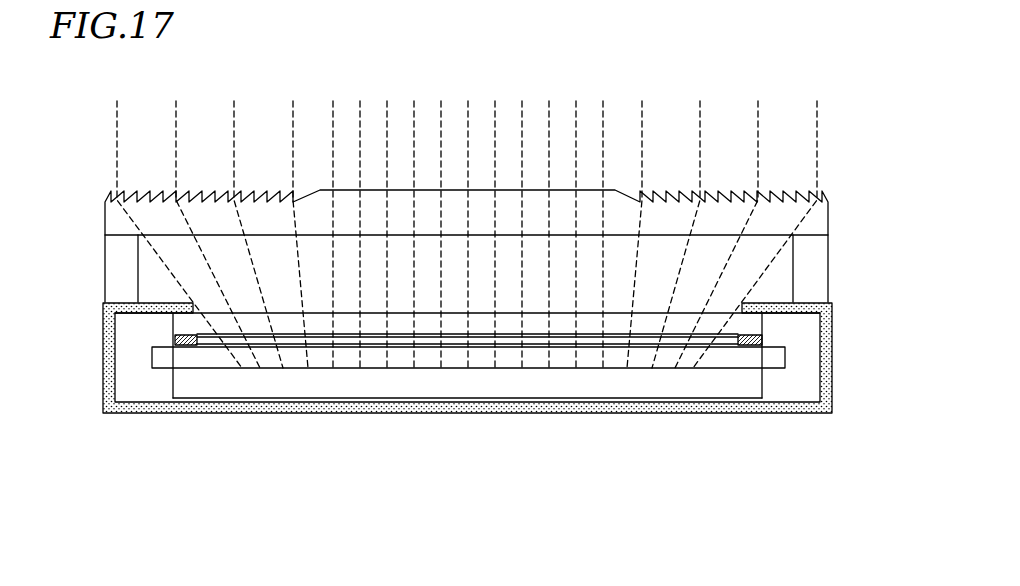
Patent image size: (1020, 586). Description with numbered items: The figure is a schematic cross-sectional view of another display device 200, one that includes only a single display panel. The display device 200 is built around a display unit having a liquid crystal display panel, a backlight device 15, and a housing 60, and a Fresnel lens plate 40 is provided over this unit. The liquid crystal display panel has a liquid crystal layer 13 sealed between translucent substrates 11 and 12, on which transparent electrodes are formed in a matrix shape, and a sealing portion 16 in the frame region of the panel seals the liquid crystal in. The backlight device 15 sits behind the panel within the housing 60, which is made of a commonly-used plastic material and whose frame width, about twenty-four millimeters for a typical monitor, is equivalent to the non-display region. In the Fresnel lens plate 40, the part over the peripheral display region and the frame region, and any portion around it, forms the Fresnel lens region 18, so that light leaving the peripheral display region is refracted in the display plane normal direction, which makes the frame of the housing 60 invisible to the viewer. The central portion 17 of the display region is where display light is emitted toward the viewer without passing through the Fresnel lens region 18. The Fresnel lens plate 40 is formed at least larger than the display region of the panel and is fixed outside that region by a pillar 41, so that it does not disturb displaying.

The display device 200 is at (827, 64).
The translucent substrate 11 is at (188, 320).
The translucent substrate 12 is at (773, 357).
The liquid crystal layer 13 is at (480, 342).
The backlight device 15 is at (332, 388).
The sealing portion 16 is at (748, 347).
The display region portion not via Fresnel lens region 17 is at (607, 80).
The Fresnel lens region 18 is at (317, 80).
The Fresnel lens plate 40 is at (817, 223).
The pillar 41 is at (118, 285).
The housing 60 is at (142, 412).